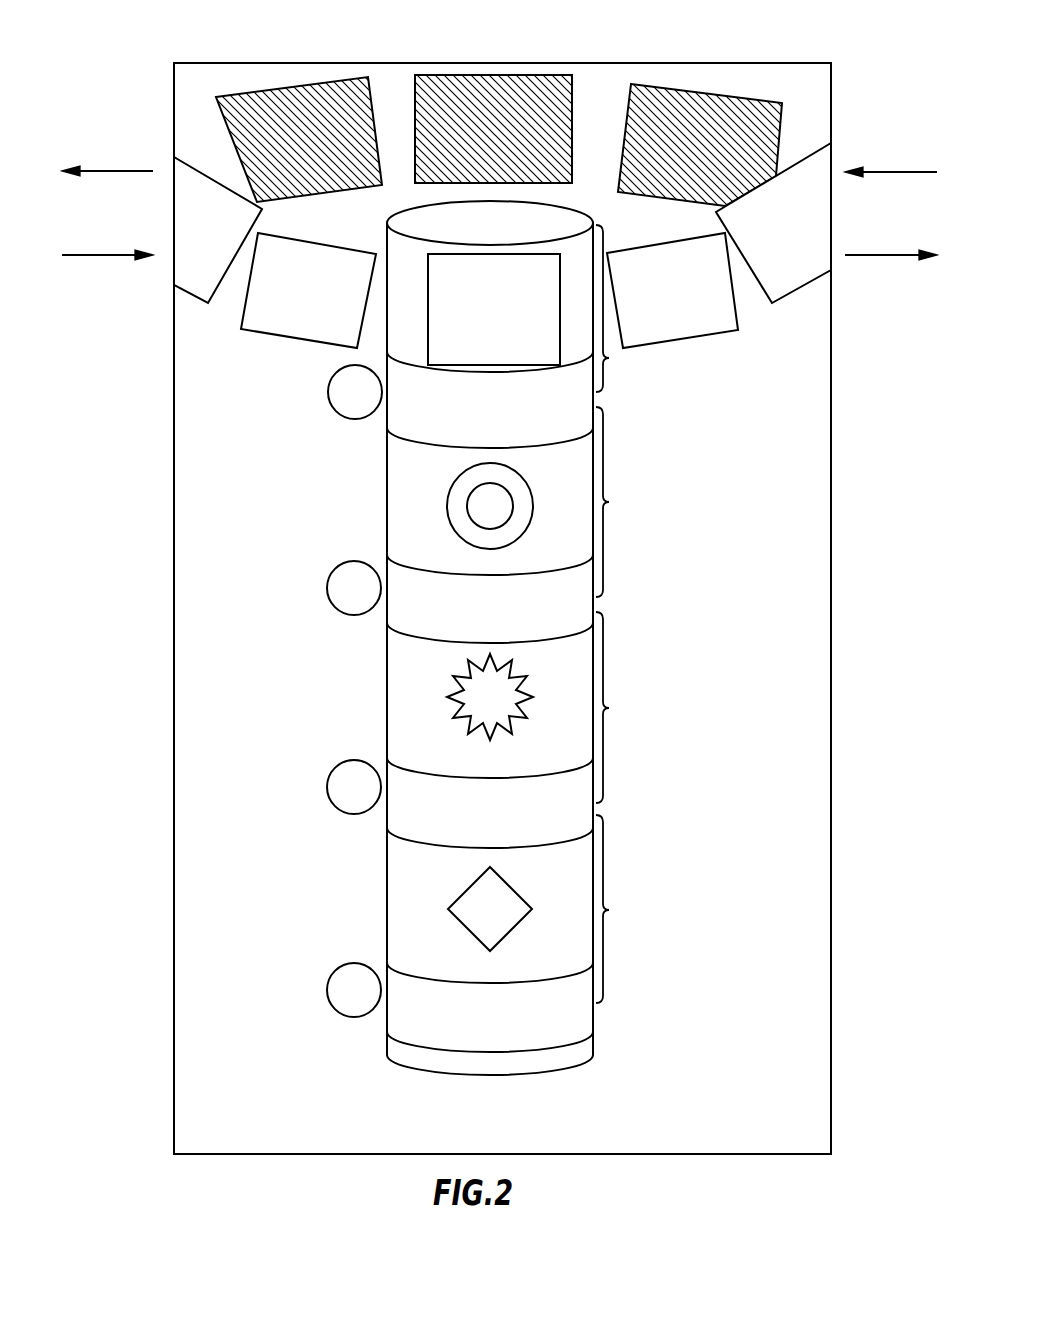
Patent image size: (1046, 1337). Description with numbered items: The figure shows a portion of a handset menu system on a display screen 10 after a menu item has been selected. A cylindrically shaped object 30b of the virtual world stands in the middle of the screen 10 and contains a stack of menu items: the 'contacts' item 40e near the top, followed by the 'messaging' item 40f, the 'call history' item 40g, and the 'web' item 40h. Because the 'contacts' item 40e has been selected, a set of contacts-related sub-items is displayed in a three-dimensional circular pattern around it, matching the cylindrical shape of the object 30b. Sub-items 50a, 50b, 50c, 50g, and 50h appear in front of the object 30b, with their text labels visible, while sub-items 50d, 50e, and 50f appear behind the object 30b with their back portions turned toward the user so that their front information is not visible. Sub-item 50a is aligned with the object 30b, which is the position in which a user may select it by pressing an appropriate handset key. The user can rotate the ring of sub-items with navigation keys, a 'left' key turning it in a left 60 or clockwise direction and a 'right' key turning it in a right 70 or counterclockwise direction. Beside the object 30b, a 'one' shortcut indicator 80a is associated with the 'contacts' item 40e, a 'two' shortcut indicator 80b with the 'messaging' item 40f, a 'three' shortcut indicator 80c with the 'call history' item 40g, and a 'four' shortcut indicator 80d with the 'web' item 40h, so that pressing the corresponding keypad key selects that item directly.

The display screen 10 is at (175, 1037).
The object 30b is at (488, 1070).
The 'contacts' item 40e is at (609, 358).
The 'messaging' item 40f is at (609, 502).
The 'call history' item 40g is at (609, 708).
The 'web' item 40h is at (609, 910).
The sub-item 50a is at (488, 253).
The sub-item 50b is at (713, 338).
The sub-item 50c is at (813, 287).
The sub-item 50d is at (702, 92).
The sub-item 50e is at (530, 75).
The sub-item 50f is at (248, 92).
The sub-item 50g is at (192, 298).
The sub-item 50h is at (317, 344).
The left direction 60 is at (103, 171).
The right direction 70 is at (115, 256).
The '1' shortcut indicator 80a is at (342, 417).
The '2' shortcut indicator 80b is at (345, 615).
The '3' shortcut indicator 80c is at (350, 814).
The '4' shortcut indicator 80d is at (348, 1018).